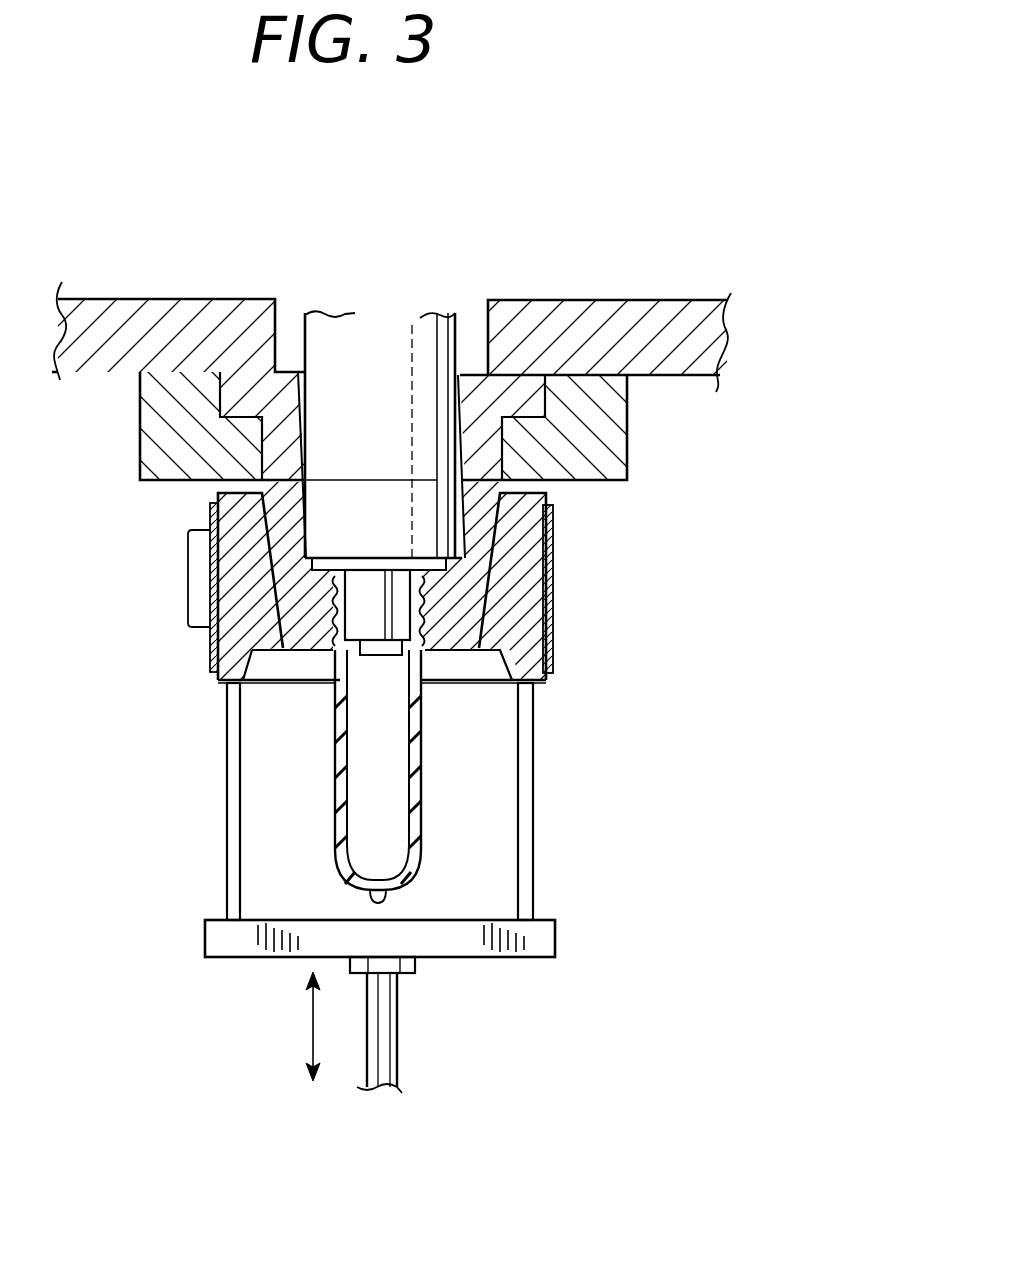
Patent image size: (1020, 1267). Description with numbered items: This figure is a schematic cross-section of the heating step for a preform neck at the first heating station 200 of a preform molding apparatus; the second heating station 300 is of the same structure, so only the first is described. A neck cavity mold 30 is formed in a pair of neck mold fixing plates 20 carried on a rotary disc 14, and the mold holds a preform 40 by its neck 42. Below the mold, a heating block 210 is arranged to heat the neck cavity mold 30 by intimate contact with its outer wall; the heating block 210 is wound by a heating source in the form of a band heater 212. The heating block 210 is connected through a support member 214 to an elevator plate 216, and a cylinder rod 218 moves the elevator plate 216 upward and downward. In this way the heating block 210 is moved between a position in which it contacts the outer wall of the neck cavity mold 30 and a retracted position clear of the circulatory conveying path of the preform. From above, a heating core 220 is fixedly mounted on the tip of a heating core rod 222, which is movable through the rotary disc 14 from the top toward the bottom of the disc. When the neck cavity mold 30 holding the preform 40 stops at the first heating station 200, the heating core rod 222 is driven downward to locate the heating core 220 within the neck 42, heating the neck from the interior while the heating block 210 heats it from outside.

The rotary disc 14 is at (727, 343).
The neck mold fixing plate 20 is at (610, 457).
The neck cavity mold 30 is at (523, 400).
The preform 40 is at (417, 827).
The neck 42 is at (333, 614).
The first heating station 200 is at (917, 236).
The second heating station 300 is at (835, 216).
The heating block 210 is at (525, 583).
The band heater 212 is at (555, 528).
The support member 214 is at (535, 887).
The elevator plate 216 is at (555, 940).
The cylinder rod 218 is at (397, 1030).
The heating core 220 is at (428, 627).
The heating core rod 222 is at (420, 375).